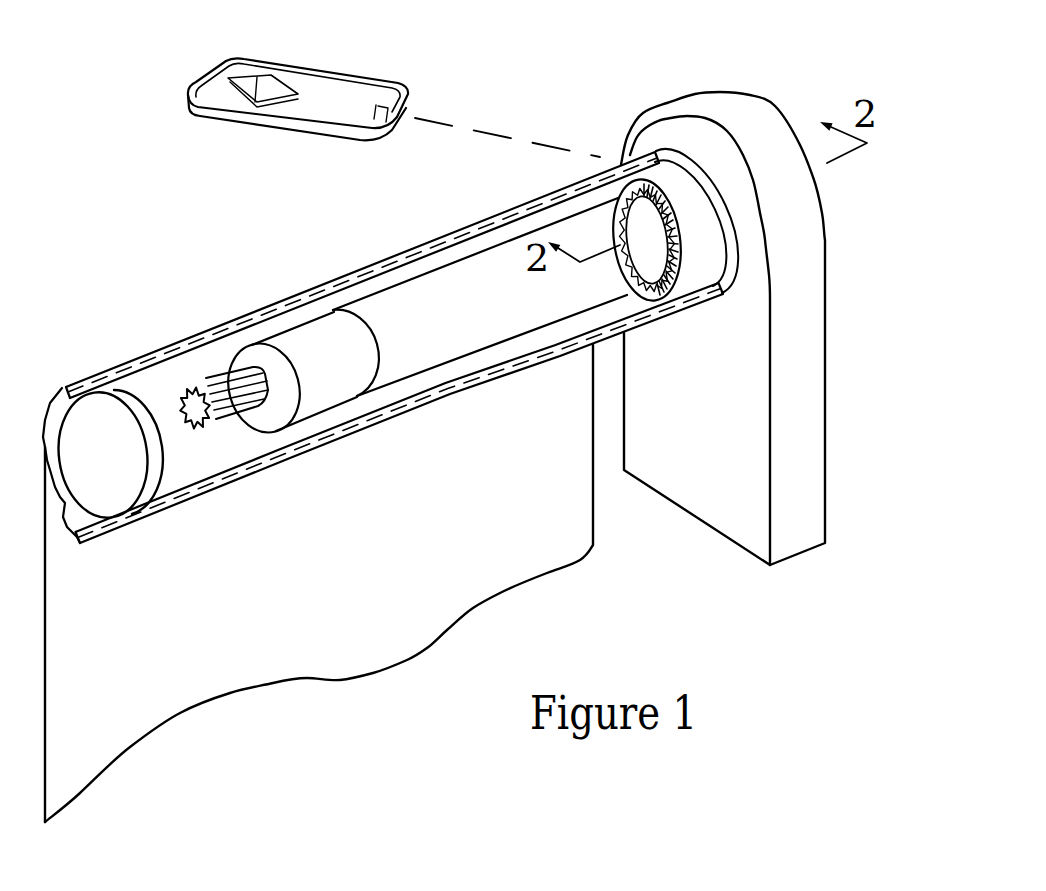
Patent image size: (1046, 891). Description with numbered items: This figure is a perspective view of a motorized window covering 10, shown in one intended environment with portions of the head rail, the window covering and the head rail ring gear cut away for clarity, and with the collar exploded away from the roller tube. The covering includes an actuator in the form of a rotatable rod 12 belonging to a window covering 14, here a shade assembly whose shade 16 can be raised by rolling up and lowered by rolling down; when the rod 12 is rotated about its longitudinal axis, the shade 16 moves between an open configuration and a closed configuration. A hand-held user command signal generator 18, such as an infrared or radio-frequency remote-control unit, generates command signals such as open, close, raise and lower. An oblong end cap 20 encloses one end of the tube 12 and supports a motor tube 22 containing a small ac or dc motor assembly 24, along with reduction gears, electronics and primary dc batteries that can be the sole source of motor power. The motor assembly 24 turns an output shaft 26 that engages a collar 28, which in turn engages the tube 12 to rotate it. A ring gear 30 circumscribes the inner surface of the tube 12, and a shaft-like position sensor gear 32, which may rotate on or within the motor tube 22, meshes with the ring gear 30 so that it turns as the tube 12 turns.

The motorized window covering 10 is at (468, 425).
The rotatable rod 12 is at (462, 228).
The window covering 14 is at (226, 733).
The shade 16 is at (507, 478).
The hand-held user command signal generator 18 is at (323, 114).
The oblong end cap 20 is at (728, 513).
The motor tube 22 is at (385, 298).
The motor assembly 24 is at (291, 340).
The output shaft 26 is at (204, 380).
The collar 28 is at (109, 390).
The ring gear 30 is at (611, 178).
The position sensor gear 32 is at (705, 300).